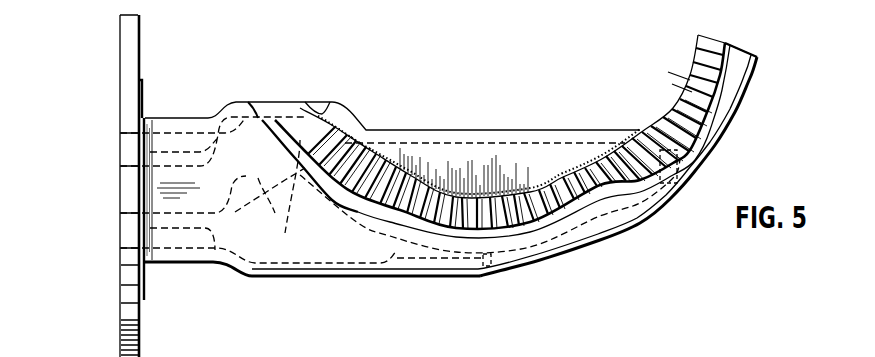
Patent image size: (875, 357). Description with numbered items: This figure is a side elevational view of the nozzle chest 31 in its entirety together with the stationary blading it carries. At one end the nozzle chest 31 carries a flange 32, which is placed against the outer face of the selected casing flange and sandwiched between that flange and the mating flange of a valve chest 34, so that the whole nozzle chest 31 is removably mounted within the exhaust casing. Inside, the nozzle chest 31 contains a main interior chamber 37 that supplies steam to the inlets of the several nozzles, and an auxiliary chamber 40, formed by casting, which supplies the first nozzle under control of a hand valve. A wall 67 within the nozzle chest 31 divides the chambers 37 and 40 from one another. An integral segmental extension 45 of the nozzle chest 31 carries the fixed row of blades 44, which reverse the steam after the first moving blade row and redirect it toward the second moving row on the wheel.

The nozzle chest 31 is at (347, 280).
The flange 32 is at (133, 332).
The valve chest 34 is at (56, 3).
The main interior chamber 37 is at (497, 168).
The auxiliary chamber 40 is at (254, 116).
The fixed row of blades 44 is at (686, 85).
The integral segmental extension 45 is at (310, 122).
The wall 67 is at (273, 220).